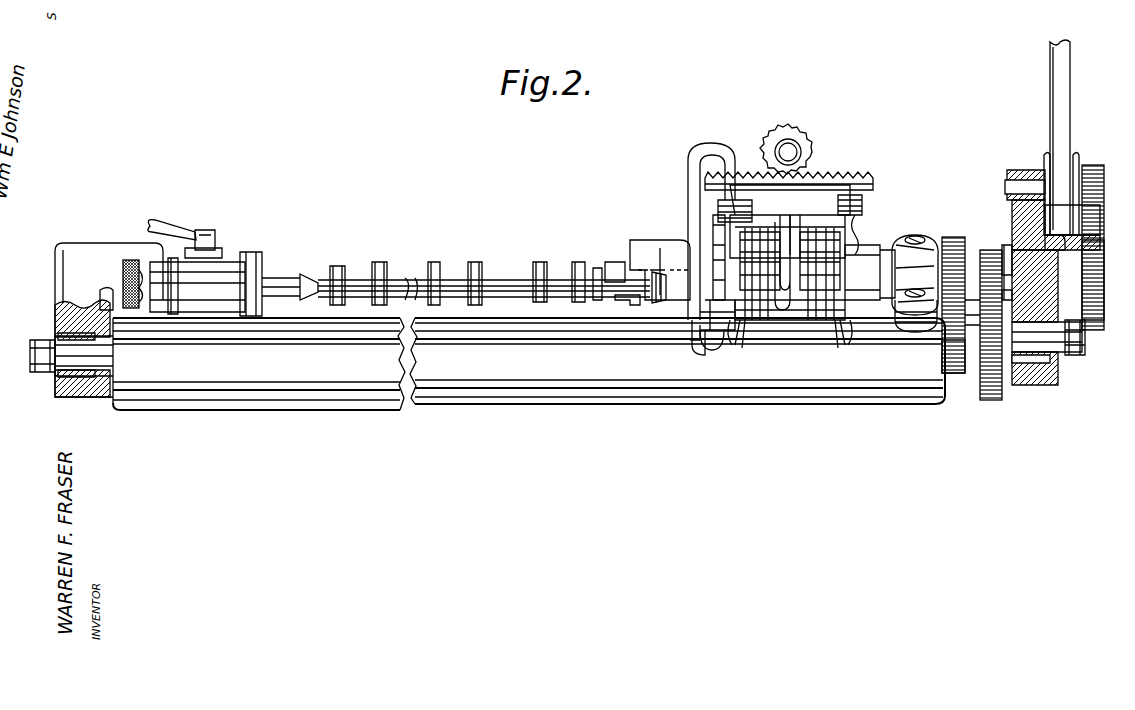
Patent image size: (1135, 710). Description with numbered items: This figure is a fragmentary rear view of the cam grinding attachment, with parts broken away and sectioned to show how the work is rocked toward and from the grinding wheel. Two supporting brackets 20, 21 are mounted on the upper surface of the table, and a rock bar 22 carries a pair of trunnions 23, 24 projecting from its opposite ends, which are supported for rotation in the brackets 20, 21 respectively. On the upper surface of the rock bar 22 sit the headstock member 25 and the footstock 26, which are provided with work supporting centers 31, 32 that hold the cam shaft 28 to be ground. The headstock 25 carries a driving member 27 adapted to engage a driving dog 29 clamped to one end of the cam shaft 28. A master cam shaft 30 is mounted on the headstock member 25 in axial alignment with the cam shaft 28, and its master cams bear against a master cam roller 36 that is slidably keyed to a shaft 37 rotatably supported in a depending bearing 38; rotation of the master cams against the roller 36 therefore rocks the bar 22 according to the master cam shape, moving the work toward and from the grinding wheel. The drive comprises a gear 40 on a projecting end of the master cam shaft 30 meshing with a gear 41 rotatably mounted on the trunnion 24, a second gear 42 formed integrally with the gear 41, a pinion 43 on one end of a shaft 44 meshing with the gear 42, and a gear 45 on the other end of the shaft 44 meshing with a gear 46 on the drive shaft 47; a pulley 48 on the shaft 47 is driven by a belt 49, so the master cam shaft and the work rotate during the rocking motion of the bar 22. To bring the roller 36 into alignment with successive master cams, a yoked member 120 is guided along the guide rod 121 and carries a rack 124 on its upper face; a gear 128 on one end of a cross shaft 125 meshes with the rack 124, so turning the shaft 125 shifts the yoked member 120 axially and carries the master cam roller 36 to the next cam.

The supporting bracket 20 is at (100, 395).
The supporting bracket 21 is at (1027, 388).
The rock bar 22 is at (810, 357).
The trunnion 23 is at (70, 352).
The trunnion 24 is at (1053, 338).
The headstock member 25 is at (715, 245).
The footstock 26 is at (255, 250).
The driving member 27 is at (690, 245).
The cam shaft 28 is at (507, 275).
The driving dog 29 is at (645, 258).
The master cam shaft 30 is at (845, 260).
The work supporting center 31 is at (292, 280).
The work supporting center 32 is at (650, 298).
The master cam roller 36 is at (790, 290).
The shaft 37 is at (758, 290).
The bearing 38 is at (700, 290).
The gear 40 is at (952, 237).
The gear 41 is at (957, 373).
The second gear 42 is at (992, 400).
The pinion 43 is at (990, 250).
The shaft 44 is at (1015, 243).
The gear 45 is at (1098, 320).
The gear 46 is at (1092, 165).
The drive shaft 47 is at (1027, 188).
The pulley 48 is at (1048, 160).
The belt 49 is at (1055, 60).
The yoked member 120 is at (775, 235).
The guide rod 121 is at (860, 193).
The rack 124 is at (856, 172).
The cross shaft 125 is at (785, 150).
The gear 128 is at (792, 132).